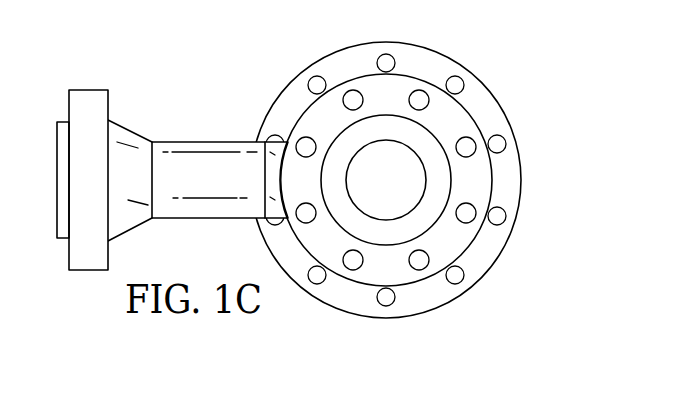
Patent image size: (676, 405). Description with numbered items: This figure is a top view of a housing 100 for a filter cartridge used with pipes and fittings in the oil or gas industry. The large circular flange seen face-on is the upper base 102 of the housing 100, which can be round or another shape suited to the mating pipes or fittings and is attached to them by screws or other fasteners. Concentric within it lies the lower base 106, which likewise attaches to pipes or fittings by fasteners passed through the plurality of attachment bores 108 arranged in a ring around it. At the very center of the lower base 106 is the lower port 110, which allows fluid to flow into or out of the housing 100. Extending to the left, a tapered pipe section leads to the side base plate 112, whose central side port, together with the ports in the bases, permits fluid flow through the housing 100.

The housing 100 is at (317, 164).
The upper base 102 is at (502, 252).
The lower base 106 is at (418, 78).
The attachment bores 108 is at (350, 88).
The lower port 110 is at (392, 217).
The side base plate 112 is at (87, 90).